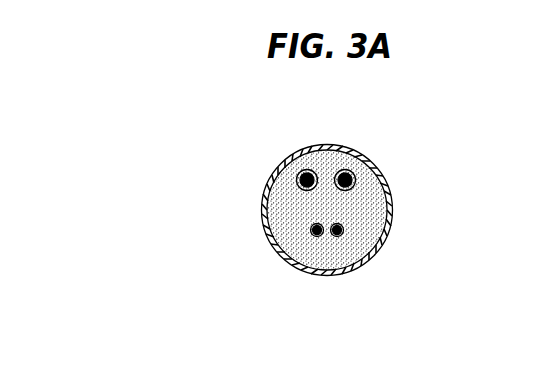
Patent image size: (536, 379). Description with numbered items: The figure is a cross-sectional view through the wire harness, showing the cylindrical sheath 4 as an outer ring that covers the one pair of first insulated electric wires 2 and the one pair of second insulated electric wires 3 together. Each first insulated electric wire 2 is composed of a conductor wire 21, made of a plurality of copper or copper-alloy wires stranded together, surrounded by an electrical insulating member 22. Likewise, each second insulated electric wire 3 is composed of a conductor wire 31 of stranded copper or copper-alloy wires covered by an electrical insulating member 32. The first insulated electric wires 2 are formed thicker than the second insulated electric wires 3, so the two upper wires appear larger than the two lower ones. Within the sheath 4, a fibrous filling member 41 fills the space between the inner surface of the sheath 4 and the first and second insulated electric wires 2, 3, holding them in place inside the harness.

The first insulated electric wire 2 is at (356, 167).
The conductor wire 21 is at (356, 178).
The electrical insulating member 22 is at (389, 187).
The second insulated electric wire 3 is at (327, 286).
The conductor wire 31 is at (338, 237).
The electrical insulating member 32 is at (343, 234).
The sheath 4 is at (357, 150).
The fibrous filling member 41 is at (293, 225).